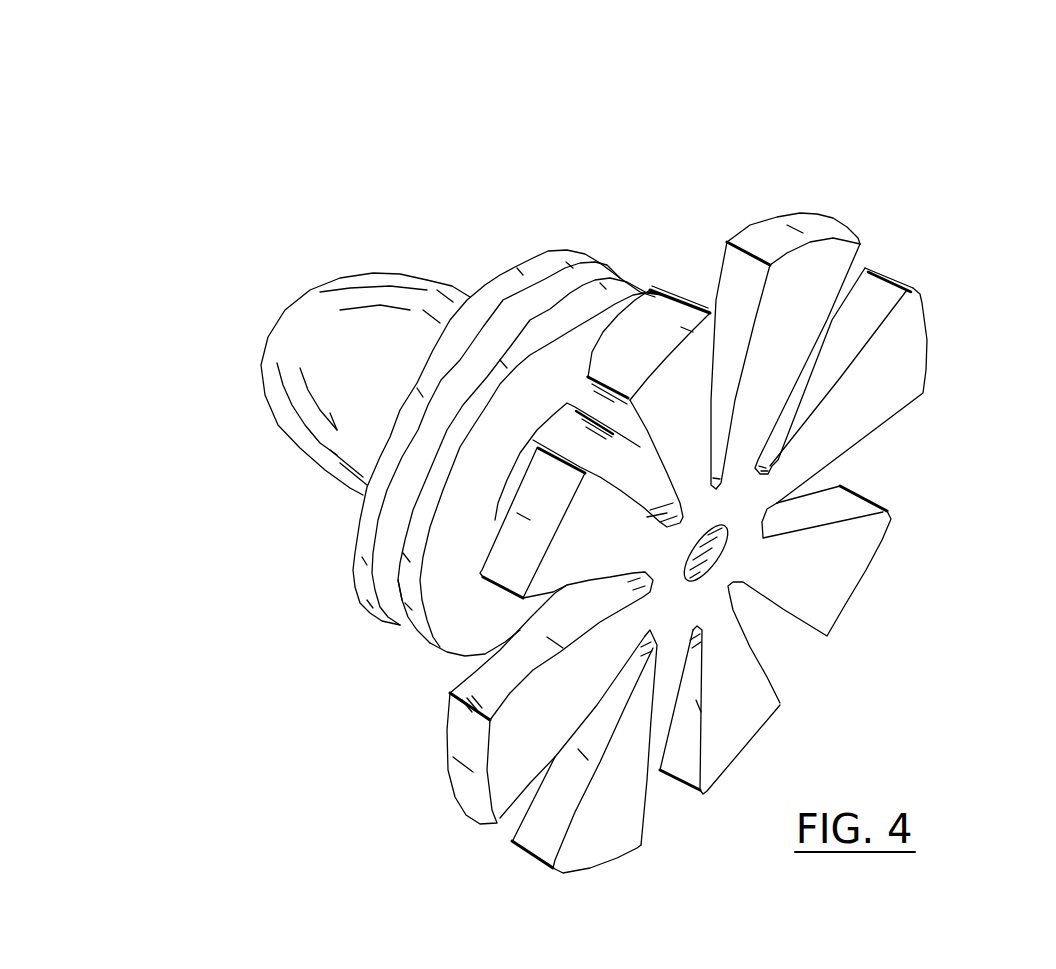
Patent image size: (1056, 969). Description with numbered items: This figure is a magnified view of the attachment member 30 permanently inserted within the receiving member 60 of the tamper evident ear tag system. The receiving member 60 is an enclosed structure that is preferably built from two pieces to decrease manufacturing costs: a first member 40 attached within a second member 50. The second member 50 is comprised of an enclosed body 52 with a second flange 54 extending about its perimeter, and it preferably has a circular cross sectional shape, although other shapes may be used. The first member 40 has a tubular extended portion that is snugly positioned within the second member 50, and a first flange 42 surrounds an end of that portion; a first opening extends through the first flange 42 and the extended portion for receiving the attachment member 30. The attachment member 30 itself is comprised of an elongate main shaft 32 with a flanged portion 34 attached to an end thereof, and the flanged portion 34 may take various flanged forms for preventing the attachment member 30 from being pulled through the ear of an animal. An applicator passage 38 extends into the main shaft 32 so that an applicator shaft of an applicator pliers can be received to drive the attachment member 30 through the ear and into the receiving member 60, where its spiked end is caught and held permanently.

The attachment member 30 is at (734, 522).
The main shaft 32 is at (598, 411).
The flanged portion 34 is at (828, 710).
The applicator passage 38 is at (848, 539).
The first member 40 is at (339, 627).
The first flange 42 is at (456, 389).
The second member 50 is at (308, 320).
The enclosed body 52 is at (256, 424).
The second flange 54 is at (504, 376).
The receiving member 60 is at (595, 456).